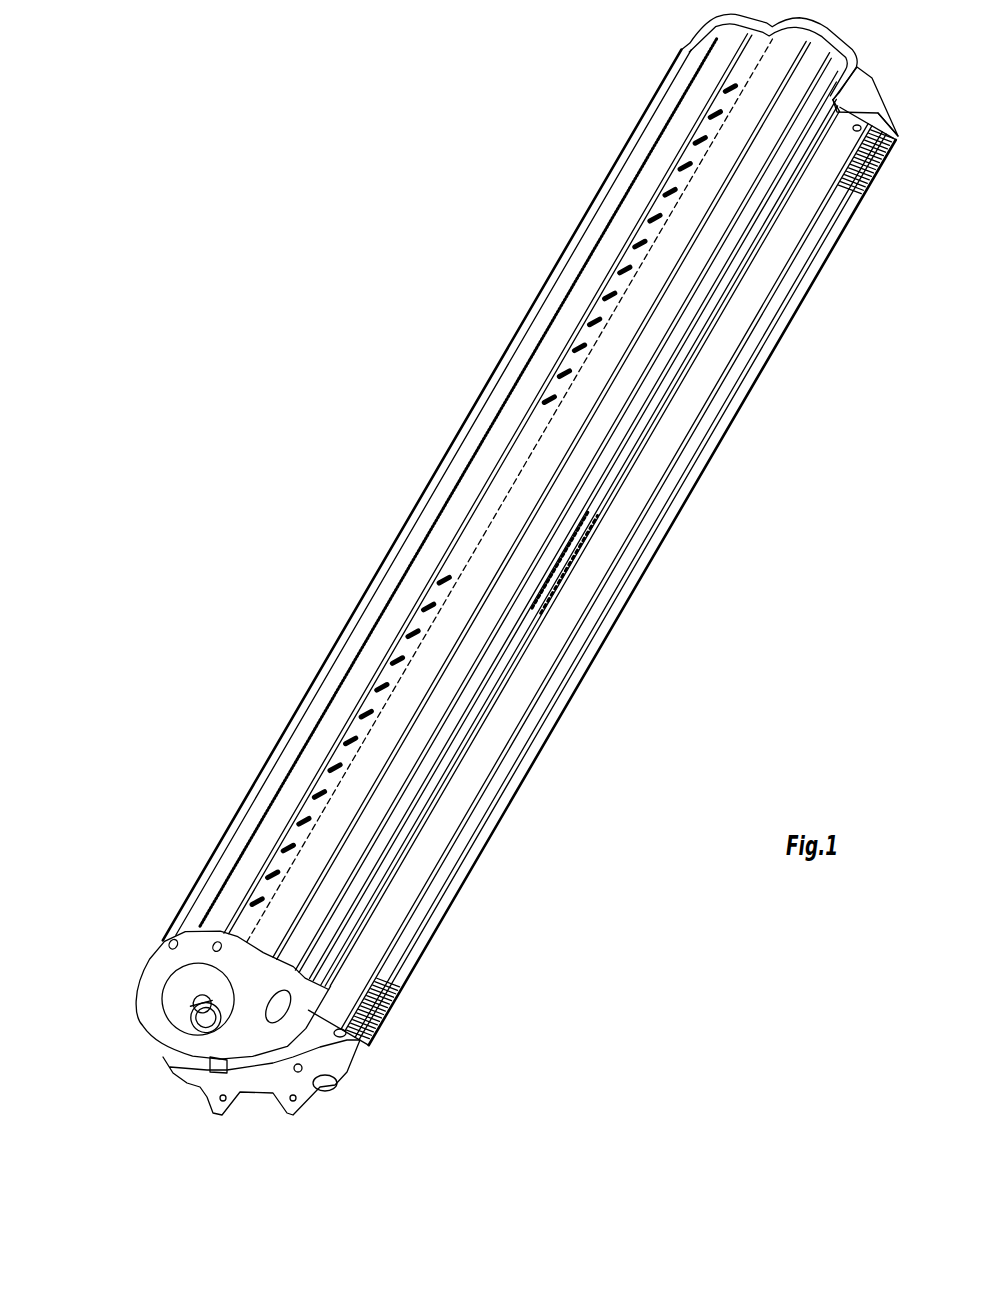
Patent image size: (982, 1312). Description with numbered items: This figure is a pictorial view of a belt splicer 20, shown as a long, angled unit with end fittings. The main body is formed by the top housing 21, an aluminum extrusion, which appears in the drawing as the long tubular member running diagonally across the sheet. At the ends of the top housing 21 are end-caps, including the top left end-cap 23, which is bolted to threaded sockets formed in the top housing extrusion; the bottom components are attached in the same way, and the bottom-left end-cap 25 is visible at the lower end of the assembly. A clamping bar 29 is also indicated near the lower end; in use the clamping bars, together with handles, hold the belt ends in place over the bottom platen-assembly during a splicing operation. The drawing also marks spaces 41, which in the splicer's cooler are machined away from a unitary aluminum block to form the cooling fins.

The belt splicer 20 is at (457, 385).
The top housing 21 is at (440, 540).
The top left end-cap 23 is at (490, 790).
The bottom-left end-cap 25 is at (160, 1038).
The spaces between the fins 41 is at (205, 1005).
The clamping bars 29 is at (272, 1077).